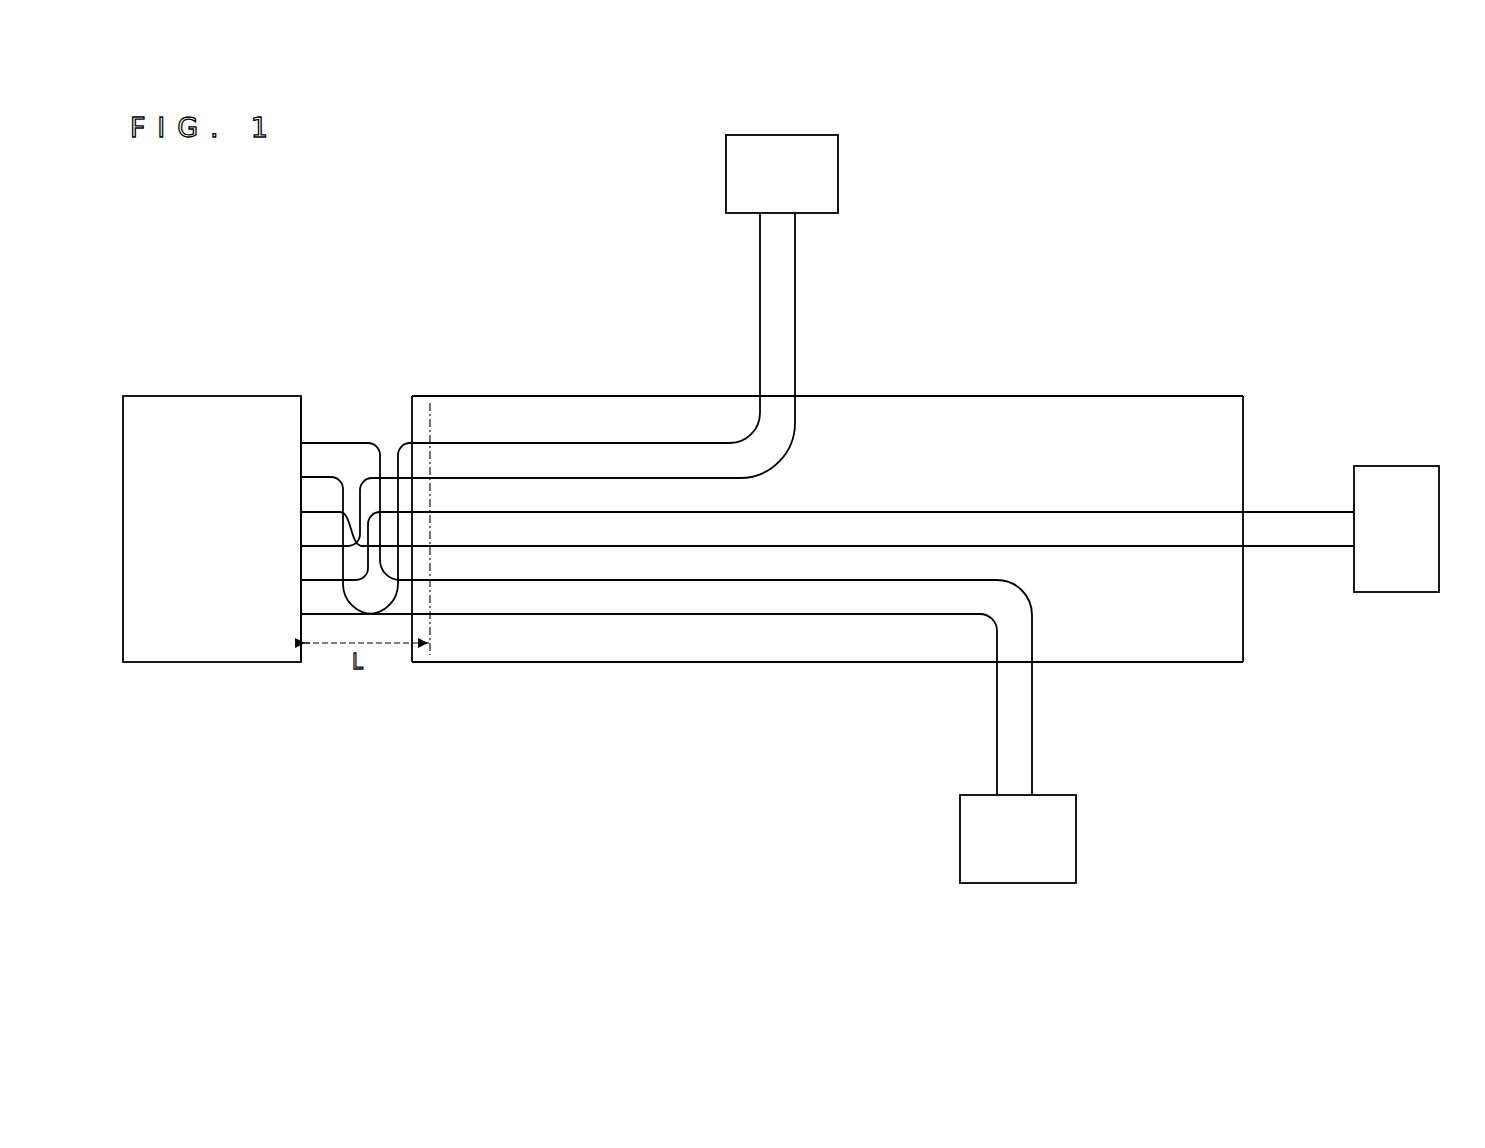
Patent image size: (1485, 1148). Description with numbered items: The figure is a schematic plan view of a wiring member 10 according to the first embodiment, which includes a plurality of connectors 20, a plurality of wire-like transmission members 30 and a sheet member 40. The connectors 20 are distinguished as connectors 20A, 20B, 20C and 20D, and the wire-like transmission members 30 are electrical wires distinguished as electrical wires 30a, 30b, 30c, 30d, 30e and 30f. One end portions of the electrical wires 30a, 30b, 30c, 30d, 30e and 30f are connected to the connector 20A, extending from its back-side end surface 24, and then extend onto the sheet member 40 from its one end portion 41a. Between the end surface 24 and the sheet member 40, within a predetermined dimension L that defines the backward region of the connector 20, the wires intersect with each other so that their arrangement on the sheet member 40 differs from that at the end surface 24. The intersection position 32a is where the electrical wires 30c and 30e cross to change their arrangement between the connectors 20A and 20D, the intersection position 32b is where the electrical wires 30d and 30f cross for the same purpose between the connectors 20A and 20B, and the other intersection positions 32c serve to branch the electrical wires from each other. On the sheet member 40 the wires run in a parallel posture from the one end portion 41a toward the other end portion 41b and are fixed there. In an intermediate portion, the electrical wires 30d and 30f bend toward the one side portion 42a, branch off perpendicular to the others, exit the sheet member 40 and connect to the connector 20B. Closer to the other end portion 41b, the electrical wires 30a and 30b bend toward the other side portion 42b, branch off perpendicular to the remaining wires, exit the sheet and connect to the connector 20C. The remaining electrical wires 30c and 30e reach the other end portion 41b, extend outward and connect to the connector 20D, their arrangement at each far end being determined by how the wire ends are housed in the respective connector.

The wiring member 10 is at (430, 247).
The connector 20 is at (785, 509).
The connector 20A is at (219, 525).
The connector 20B is at (838, 169).
The connector 20C is at (1076, 840).
The connector 20D is at (1395, 593).
The end surface 24 is at (310, 658).
The wire-like transmission member 30 is at (795, 504).
The electrical wire 30a is at (308, 442).
The electrical wire 30b is at (308, 476).
The electrical wire 30c is at (308, 511).
The electrical wire 30d is at (308, 545).
The electrical wire 30e is at (308, 579).
The electrical wire 30f is at (308, 613).
The intersection position 32a is at (358, 532).
The intersection position 32b is at (390, 470).
The intersection position 32c is at (340, 575).
The sheet member 40 is at (862, 527).
The one end portion 41a is at (443, 651).
The other end portion 41b is at (1236, 425).
The one side portion 42a is at (860, 412).
The other side portion 42b is at (833, 652).